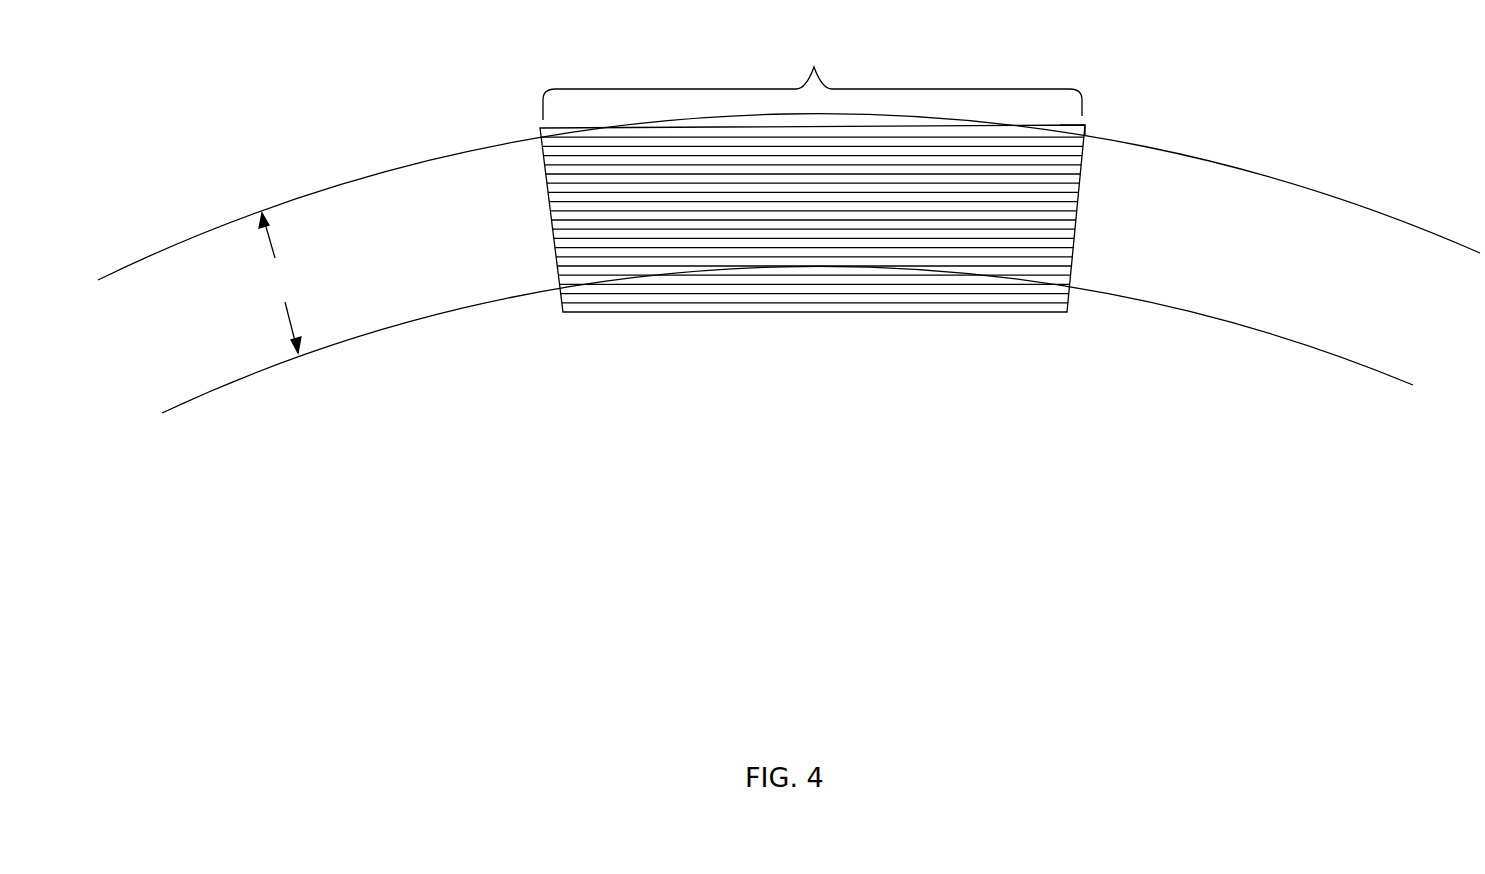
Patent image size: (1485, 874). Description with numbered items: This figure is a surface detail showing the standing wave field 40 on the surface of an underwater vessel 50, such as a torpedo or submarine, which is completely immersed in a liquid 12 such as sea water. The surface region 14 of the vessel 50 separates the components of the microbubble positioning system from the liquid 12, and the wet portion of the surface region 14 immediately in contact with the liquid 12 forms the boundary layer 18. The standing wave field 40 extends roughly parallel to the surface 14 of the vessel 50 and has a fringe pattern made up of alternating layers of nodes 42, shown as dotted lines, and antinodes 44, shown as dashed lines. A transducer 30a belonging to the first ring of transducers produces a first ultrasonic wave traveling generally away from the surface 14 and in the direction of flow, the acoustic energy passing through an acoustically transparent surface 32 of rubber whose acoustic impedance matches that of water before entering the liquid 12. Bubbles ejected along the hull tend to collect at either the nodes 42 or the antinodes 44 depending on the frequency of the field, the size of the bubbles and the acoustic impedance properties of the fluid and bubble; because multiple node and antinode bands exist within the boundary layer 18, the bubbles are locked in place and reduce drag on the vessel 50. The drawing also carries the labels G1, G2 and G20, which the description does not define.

The liquid 12 is at (1206, 36).
The surface region 14 is at (1208, 317).
The boundary layer 18 is at (294, 280).
The transducer 30a is at (807, 312).
The acoustically transparent surface 32 is at (1176, 310).
The standing wave field 40 is at (812, 77).
The nodes 42 is at (1087, 126).
The antinodes 44 is at (1088, 128).
The underwater vessel 50 is at (797, 609).
The gap G1 is at (743, 327).
The gap G2 is at (1235, 368).
The gap G20 is at (361, 372).